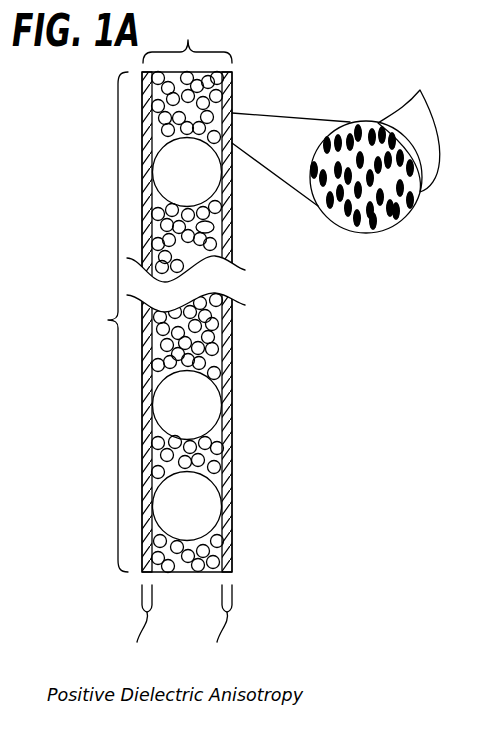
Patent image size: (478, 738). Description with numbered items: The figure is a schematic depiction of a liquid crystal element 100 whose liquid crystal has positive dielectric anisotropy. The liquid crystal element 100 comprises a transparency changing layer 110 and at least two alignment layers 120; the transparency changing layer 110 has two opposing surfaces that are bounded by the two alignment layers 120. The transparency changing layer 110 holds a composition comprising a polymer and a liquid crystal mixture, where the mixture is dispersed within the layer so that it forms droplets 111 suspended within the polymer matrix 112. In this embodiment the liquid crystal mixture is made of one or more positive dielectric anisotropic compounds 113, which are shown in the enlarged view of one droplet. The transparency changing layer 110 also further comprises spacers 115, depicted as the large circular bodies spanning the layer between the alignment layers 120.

The liquid crystal element 100 is at (155, 322).
The transparency changing layer 110 is at (187, 36).
The droplets 111 is at (212, 363).
The polymer matrix 112 is at (200, 458).
The positive dielectric anisotropic compounds 113 is at (336, 148).
The spacers 115 is at (207, 506).
The alignment layers 120 is at (174, 629).